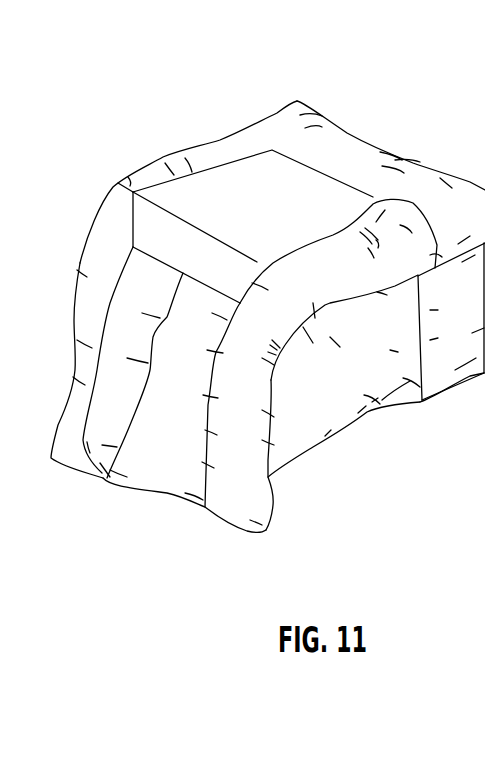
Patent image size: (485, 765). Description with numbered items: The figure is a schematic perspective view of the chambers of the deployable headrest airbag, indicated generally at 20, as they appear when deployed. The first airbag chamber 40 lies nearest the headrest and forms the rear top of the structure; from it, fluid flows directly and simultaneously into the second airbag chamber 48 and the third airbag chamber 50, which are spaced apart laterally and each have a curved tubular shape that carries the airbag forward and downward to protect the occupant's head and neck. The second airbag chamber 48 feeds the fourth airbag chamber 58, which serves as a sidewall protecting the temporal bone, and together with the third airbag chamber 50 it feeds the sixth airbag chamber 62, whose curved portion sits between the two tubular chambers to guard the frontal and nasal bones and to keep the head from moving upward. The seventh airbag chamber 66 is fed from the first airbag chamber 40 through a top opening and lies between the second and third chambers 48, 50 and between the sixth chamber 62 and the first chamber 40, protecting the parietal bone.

The cushion assembly 20 is at (394, 72).
The first airbag chamber 40 is at (407, 173).
The second airbag chamber 48 is at (427, 274).
The third airbag chamber 50 is at (210, 158).
The fourth airbag chamber 58 is at (363, 407).
The sixth airbag chamber 62 is at (147, 440).
The seventh airbag chamber 66 is at (313, 194).